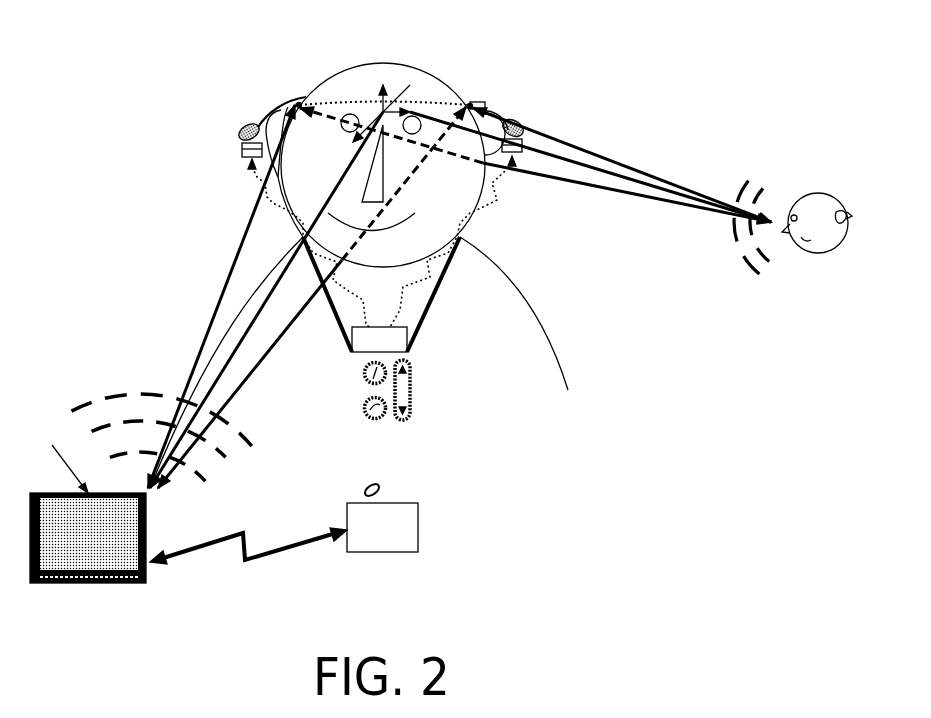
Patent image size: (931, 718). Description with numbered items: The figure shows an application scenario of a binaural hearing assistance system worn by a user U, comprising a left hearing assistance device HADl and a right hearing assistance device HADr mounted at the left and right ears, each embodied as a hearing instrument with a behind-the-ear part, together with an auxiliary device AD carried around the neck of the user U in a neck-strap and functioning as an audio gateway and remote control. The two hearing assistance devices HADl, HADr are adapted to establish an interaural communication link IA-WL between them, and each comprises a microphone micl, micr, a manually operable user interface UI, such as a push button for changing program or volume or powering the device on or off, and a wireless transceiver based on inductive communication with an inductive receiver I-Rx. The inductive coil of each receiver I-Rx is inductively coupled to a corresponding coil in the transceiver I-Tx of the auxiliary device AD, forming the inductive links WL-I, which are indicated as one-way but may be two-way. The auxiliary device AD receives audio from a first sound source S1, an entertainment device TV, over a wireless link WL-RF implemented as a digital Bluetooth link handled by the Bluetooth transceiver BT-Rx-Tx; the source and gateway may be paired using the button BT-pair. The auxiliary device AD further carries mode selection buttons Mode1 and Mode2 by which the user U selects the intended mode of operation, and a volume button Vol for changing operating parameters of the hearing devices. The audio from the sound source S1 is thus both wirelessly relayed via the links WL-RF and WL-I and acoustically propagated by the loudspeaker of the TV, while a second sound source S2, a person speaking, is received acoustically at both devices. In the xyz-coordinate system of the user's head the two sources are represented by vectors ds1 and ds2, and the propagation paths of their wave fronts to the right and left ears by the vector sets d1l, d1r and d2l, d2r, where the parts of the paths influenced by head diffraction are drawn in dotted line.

The user U is at (447, 68).
The interaural communication link IA-WL is at (364, 103).
The right hearing assistance device HADr is at (268, 98).
The left hearing assistance device HADl is at (495, 98).
The right microphone micr is at (285, 103).
The left microphone micl is at (478, 102).
The user interface UI is at (250, 127).
The inductive receiver I-Rx is at (242, 150).
The inductive wireless link WL-I is at (262, 207).
The propagation path vector from first sound source to right device d1r is at (218, 310).
The propagation path vector from first sound source to left device d1l is at (289, 322).
The first sound source vector ds1 is at (226, 365).
The propagation path vector from second sound source to right device d2r is at (640, 196).
The propagation path vector from second sound source to left device d2l is at (630, 167).
The second sound source vector ds2 is at (598, 170).
The first sound source S1 is at (100, 458).
The second sound source S2 is at (793, 222).
The entertainment device TV is at (162, 516).
The RF wireless link WL-RF is at (246, 561).
The auxiliary device AD is at (378, 439).
The inductive transceiver I-Tx is at (379, 339).
The first mode selection button Mode1 is at (364, 373).
The second mode selection button Mode2 is at (364, 409).
The volume button Vol is at (411, 385).
The Bluetooth pairing button BT-pair is at (388, 489).
The Bluetooth transceiver BT-Rx-Tx is at (382, 527).